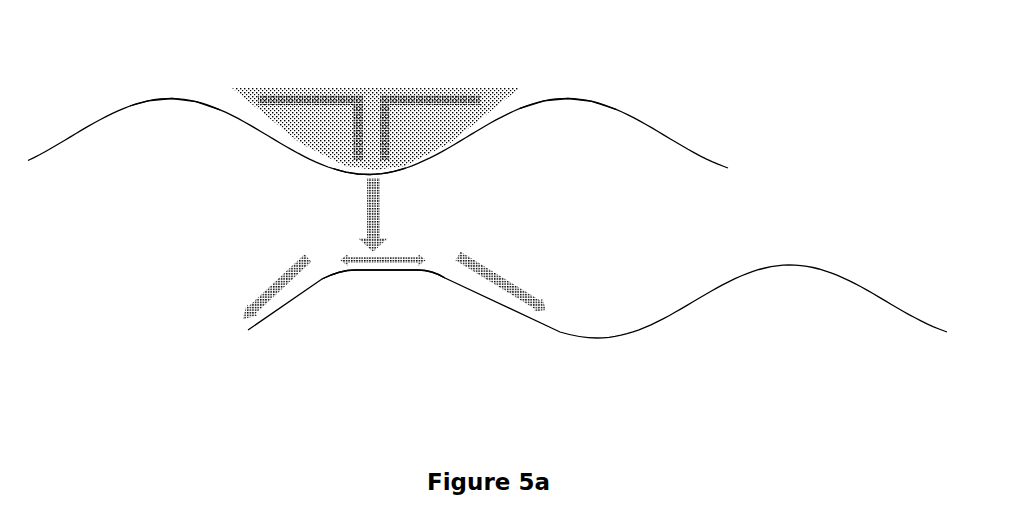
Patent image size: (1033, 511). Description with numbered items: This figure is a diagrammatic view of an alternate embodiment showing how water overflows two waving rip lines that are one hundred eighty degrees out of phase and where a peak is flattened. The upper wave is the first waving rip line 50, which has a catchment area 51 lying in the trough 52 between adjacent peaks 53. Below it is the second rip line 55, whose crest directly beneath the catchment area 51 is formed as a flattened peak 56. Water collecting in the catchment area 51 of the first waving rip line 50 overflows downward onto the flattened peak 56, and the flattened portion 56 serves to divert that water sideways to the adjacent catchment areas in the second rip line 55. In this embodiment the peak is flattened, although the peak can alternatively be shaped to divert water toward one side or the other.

The first waving rip line 50 is at (687, 142).
The catchment area 51 is at (430, 118).
The trough 52 is at (334, 165).
The peaks 53 is at (157, 138).
The second rip line 55 is at (657, 323).
The flattened peak 56 is at (362, 291).